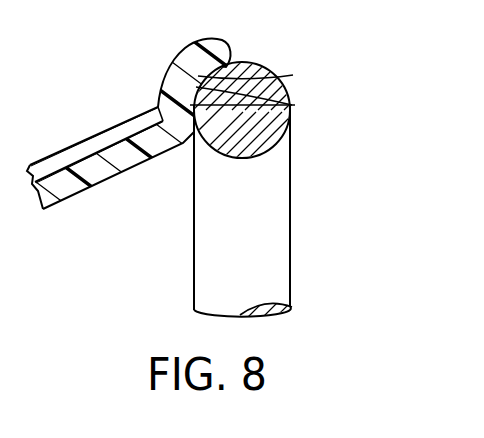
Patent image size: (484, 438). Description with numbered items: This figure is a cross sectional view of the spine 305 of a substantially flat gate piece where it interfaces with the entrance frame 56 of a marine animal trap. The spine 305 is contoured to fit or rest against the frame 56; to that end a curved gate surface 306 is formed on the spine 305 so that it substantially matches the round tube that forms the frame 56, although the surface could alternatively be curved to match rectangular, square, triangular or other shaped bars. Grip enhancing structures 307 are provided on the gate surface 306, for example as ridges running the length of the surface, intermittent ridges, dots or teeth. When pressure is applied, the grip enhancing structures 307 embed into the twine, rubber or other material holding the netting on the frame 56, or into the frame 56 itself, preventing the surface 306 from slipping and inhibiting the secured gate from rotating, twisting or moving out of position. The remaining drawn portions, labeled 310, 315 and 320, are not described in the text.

The entrance frame 56 is at (284, 181).
The spine 305 is at (183, 52).
The curved gate surface 306 is at (293, 75).
The grip enhancing structure 307 is at (292, 105).
The arm 310 is at (55, 192).
The upper surface of arm 315 is at (82, 143).
The cross-sectioned edge band of arm 320 is at (110, 168).